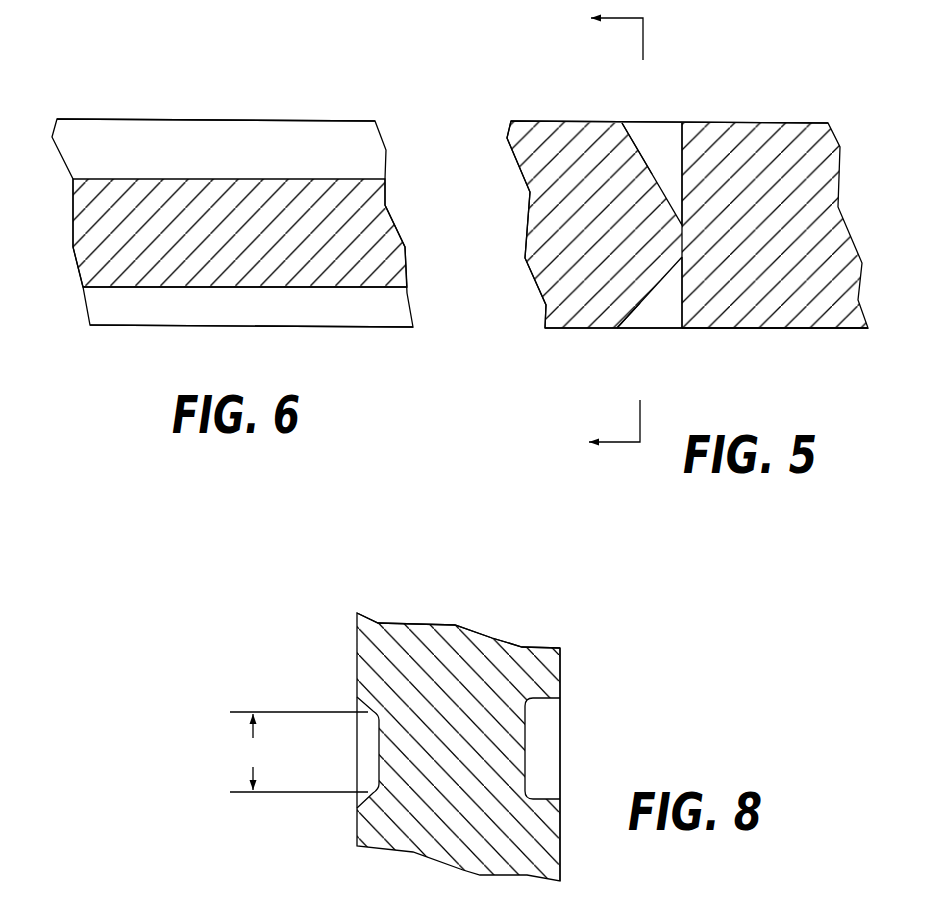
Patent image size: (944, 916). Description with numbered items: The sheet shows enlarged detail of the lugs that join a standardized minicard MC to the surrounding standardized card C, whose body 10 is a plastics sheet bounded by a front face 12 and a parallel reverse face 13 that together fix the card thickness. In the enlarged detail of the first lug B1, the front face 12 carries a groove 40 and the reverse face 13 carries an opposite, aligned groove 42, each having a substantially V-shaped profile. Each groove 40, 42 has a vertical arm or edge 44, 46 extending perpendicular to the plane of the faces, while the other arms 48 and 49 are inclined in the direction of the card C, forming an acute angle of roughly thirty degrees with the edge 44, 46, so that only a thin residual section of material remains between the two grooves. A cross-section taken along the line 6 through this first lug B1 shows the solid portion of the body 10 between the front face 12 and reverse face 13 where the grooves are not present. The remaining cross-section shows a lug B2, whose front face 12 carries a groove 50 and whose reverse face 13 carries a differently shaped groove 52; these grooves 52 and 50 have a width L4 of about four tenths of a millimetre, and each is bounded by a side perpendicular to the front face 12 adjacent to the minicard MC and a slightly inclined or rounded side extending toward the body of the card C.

In FIG. 5, the body 10 is at (553, 262).
In FIG. 6, the front face 12 is at (118, 118).
In FIG. 5, the front face 12 is at (790, 123).
In FIG. 8, the front face 12 is at (357, 640).
In FIG. 6, the reverse face 13 is at (162, 327).
In FIG. 5, the reverse face 13 is at (833, 330).
In FIG. 8, the reverse face 13 is at (562, 672).
In FIG. 6, the groove 40 is at (220, 150).
In FIG. 5, the groove 40 is at (647, 107).
In FIG. 6, the groove 42 is at (244, 312).
In FIG. 5, the groove 42 is at (651, 346).
In FIG. 5, the vertical edge 44 is at (681, 140).
In FIG. 5, the vertical edge 46 is at (681, 311).
In FIG. 5, the inclined edge 48 is at (640, 128).
In FIG. 5, the inclined edge 49 is at (640, 322).
In FIG. 8, the groove 50 is at (359, 751).
In FIG. 8, the groove 52 is at (549, 740).
In FIG. 6, the first lug B1 is at (93, 263).
In FIG. 5, the first lug B1 is at (682, 242).
In FIG. 8, the lug B2 is at (462, 743).
In FIG. 5, the card C is at (506, 167).
In FIG. 5, the minicard MC is at (763, 342).
In FIG. 8, the width of the grooves L4 is at (299, 752).
In FIG. 5, the section line 6 is at (609, 231).